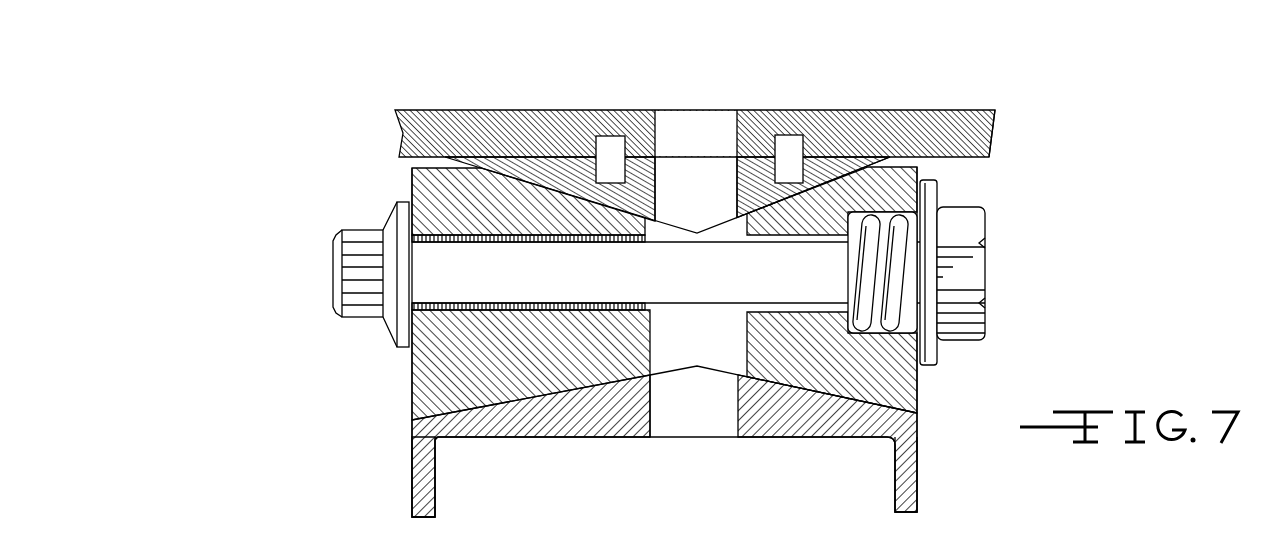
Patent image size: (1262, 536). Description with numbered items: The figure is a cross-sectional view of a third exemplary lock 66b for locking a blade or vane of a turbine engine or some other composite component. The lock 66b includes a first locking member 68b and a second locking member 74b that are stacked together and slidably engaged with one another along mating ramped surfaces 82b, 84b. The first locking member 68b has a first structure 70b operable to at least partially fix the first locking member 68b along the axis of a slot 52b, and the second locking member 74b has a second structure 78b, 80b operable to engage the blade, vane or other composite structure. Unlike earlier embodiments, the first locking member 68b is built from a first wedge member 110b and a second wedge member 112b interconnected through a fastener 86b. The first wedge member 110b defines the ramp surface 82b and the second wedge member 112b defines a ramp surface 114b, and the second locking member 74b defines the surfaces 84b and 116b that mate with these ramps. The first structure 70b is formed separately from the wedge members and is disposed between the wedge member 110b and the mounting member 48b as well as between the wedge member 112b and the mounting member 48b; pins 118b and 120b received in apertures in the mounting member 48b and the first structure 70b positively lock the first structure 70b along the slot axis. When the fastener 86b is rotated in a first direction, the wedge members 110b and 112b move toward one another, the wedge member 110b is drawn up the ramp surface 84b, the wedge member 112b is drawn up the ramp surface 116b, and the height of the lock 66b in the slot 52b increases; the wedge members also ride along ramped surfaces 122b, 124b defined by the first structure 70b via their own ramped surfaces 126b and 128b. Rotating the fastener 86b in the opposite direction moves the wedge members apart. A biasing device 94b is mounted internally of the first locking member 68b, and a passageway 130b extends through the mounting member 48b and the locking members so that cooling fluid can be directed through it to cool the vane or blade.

The mounting member 48b is at (937, 125).
The slot 52b is at (967, 160).
The lock 66b is at (1018, 236).
The first locking member 68b is at (373, 175).
The first structure 70b is at (748, 170).
The second locking member 74b is at (381, 432).
The second structure 78b is at (407, 492).
The second structure 80b is at (910, 482).
The ramped surface 82b is at (840, 397).
The ramped surface 84b is at (797, 383).
The fastener 86b is at (343, 268).
The biasing device 94b is at (910, 302).
The first wedge member 110b is at (882, 375).
The second wedge member 112b is at (418, 378).
The ramp surface 114b is at (577, 390).
The ramp surface 116b is at (512, 398).
The pin 118b is at (613, 148).
The pin 120b is at (790, 143).
The ramped surface 122b is at (853, 175).
The ramped surface 124b is at (533, 145).
The ramped surface 126b is at (832, 197).
The ramped surface 128b is at (535, 162).
The passageway 130b is at (682, 137).